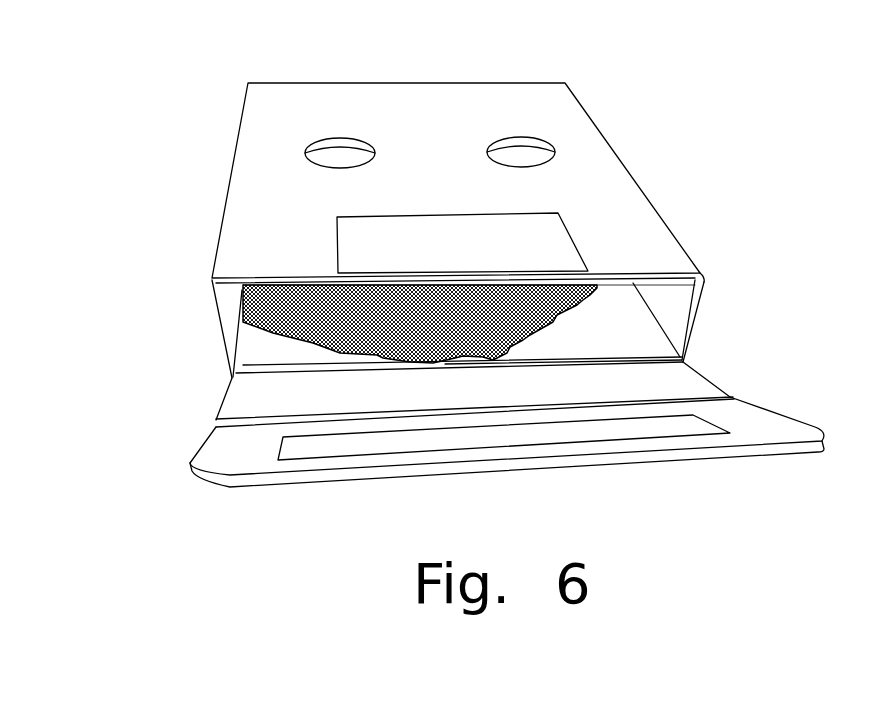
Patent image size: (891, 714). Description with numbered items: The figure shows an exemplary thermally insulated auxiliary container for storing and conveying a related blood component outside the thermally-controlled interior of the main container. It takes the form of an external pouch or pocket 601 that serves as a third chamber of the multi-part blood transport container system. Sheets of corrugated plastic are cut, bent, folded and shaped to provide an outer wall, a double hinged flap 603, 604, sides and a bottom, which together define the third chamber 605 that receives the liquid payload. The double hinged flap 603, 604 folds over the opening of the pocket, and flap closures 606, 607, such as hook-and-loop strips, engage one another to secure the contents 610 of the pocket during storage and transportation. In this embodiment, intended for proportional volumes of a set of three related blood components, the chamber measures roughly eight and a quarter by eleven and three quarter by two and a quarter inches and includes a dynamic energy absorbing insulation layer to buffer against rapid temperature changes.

The external pouch or pocket 601 is at (516, 50).
The double hinged flap 603 is at (757, 423).
The double hinged flap 604 is at (258, 397).
The third chamber 605 is at (640, 336).
The flap closure 606 is at (680, 427).
The flap closure 607 is at (500, 254).
The contents of the pocket 610 is at (275, 335).